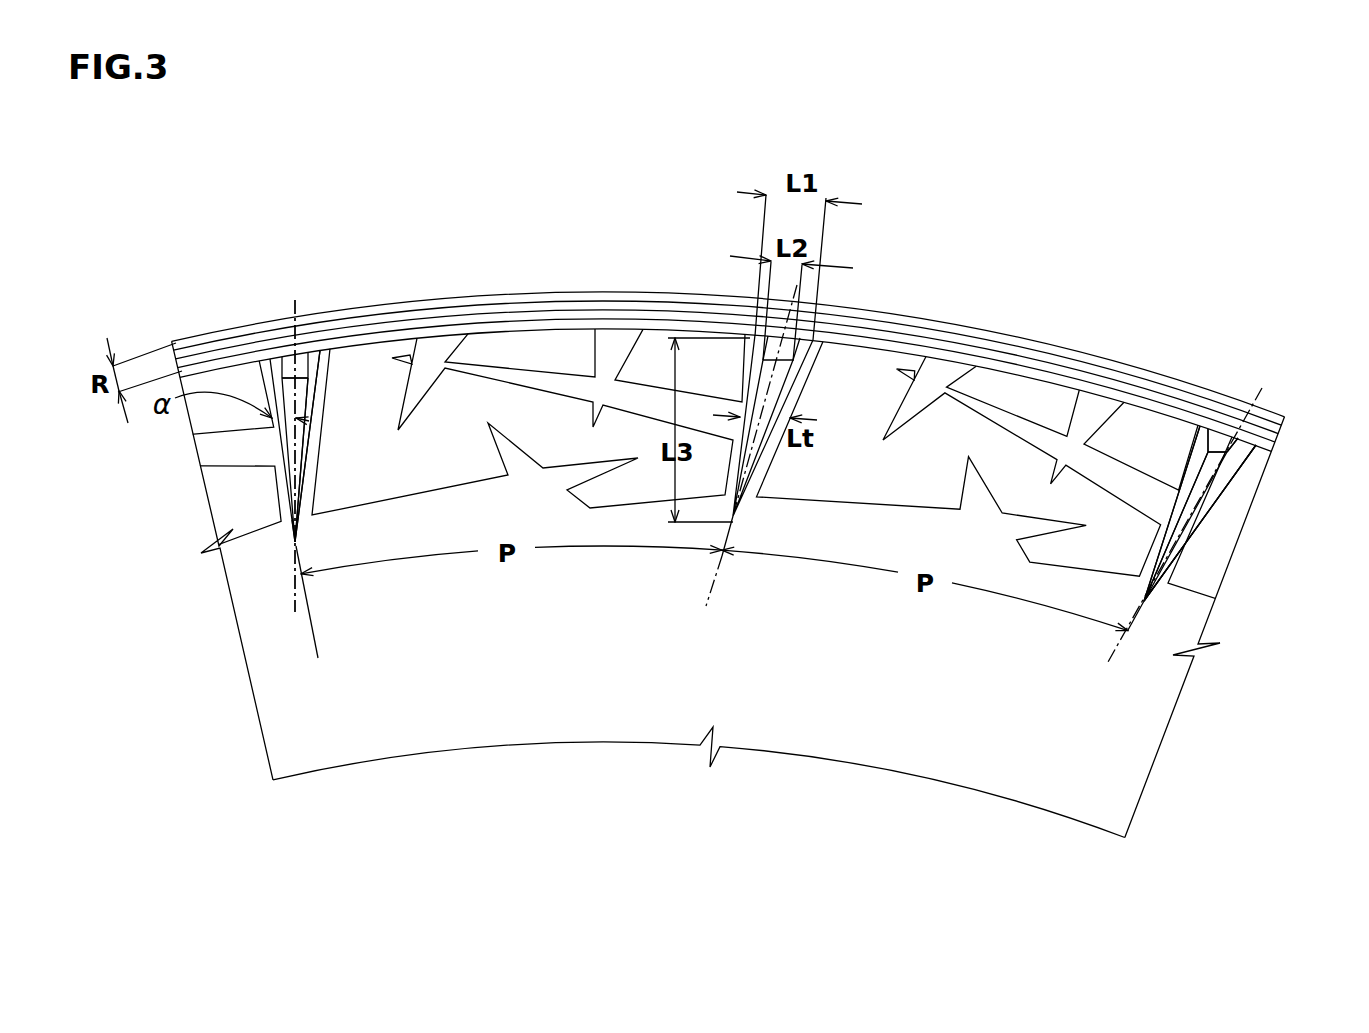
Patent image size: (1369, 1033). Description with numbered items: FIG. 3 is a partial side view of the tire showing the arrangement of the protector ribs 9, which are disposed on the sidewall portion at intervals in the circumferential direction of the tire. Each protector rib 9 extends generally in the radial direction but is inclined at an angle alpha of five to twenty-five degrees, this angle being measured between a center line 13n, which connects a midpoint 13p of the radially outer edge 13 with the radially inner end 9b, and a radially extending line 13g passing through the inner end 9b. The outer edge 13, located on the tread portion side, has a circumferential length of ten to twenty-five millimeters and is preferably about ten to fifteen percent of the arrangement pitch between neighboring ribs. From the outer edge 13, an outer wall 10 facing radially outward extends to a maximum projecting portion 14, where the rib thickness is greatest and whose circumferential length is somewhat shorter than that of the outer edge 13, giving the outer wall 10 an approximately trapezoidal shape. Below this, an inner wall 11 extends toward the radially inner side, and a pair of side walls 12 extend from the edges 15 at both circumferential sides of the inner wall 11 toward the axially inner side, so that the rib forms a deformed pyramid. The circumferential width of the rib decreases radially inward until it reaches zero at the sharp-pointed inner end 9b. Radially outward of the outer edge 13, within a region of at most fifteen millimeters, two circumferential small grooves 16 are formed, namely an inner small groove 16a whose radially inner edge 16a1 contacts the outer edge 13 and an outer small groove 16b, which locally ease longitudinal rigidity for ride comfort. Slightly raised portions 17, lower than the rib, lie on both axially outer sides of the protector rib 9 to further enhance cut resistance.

The protector rib 9 is at (282, 450).
The radially inner end 9b is at (293, 550).
The outer wall 10 is at (1218, 457).
The inner wall 11 is at (308, 405).
The side wall 12 is at (1193, 483).
The radially outer edge 13 is at (305, 365).
The center line 13n is at (293, 340).
The midpoint 13p is at (297, 352).
The radially extending line 13g is at (310, 637).
The maximum projecting portion 14 is at (300, 357).
The edge 15 is at (1212, 512).
The small groove 16 is at (614, 172).
The inner small groove 16a is at (593, 320).
The radially inner edge 16a1 is at (484, 325).
The outer small groove 16b is at (522, 305).
The slightly raised portion 17 is at (381, 470).